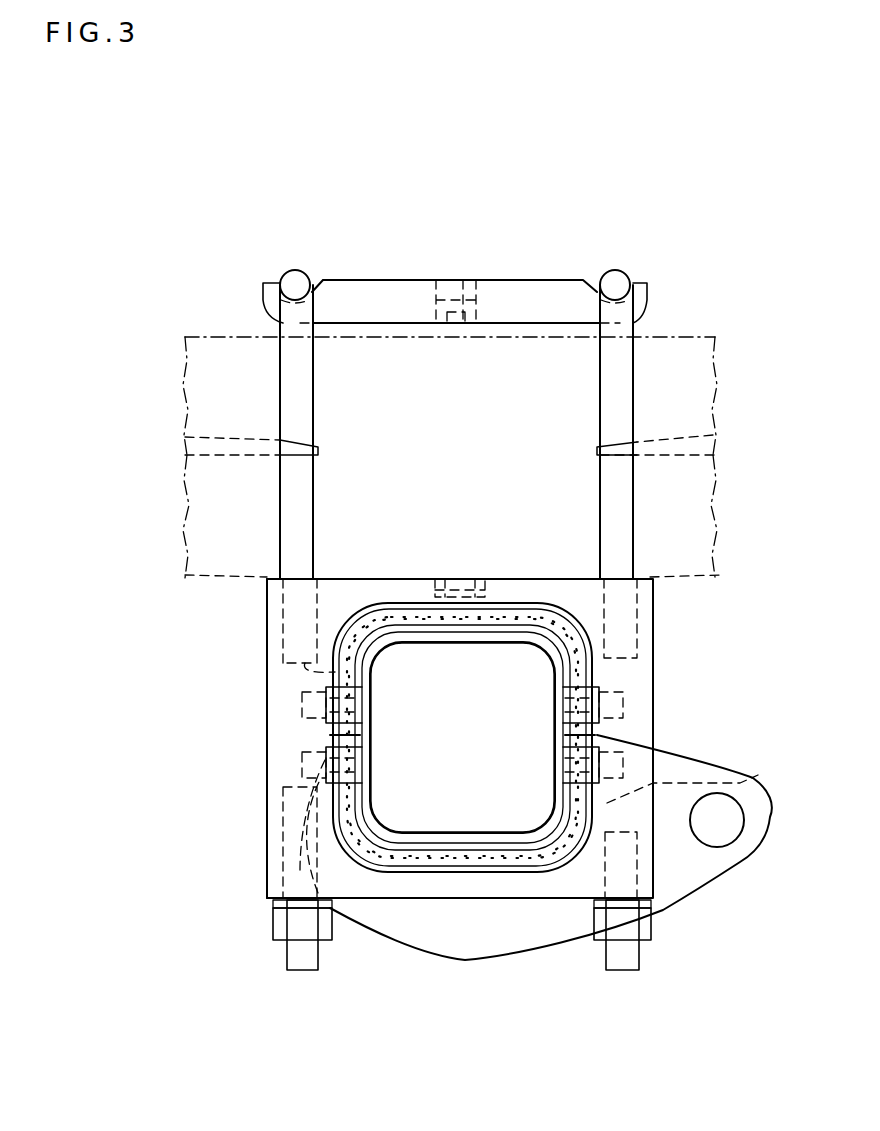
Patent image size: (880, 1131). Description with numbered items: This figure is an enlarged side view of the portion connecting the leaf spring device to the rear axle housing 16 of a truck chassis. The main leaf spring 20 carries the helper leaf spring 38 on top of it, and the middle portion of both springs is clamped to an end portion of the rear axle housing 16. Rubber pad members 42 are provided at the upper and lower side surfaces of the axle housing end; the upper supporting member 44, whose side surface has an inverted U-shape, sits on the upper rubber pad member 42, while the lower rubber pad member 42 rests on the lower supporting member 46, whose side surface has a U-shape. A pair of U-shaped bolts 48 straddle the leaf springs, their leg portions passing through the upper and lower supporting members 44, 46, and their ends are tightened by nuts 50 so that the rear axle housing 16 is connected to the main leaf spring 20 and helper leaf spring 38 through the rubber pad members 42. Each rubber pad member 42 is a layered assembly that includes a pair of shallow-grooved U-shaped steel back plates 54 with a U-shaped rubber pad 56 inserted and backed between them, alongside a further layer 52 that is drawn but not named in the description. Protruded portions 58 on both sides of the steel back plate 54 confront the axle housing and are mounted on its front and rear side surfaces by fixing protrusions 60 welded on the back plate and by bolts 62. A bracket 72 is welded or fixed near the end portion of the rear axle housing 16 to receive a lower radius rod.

The rear axle housing 16 is at (430, 845).
The main leaf spring 20 is at (227, 527).
The helper leaf spring 38 is at (228, 372).
The rubber pad member 42 is at (567, 608).
The upper supporting member 44 is at (270, 629).
The lower supporting member 46 is at (270, 810).
The U-shaped bolt 48 is at (292, 287).
The nut 50 is at (272, 920).
The inner layer 52 is at (403, 613).
The U-shaped steel back plate 54 is at (447, 628).
The U-shaped rubber pad 56 is at (500, 617).
The protruded portion 58 is at (330, 672).
The fixing protrusion 60 is at (343, 726).
The bolt 62 is at (303, 697).
The bracket 72 is at (692, 872).